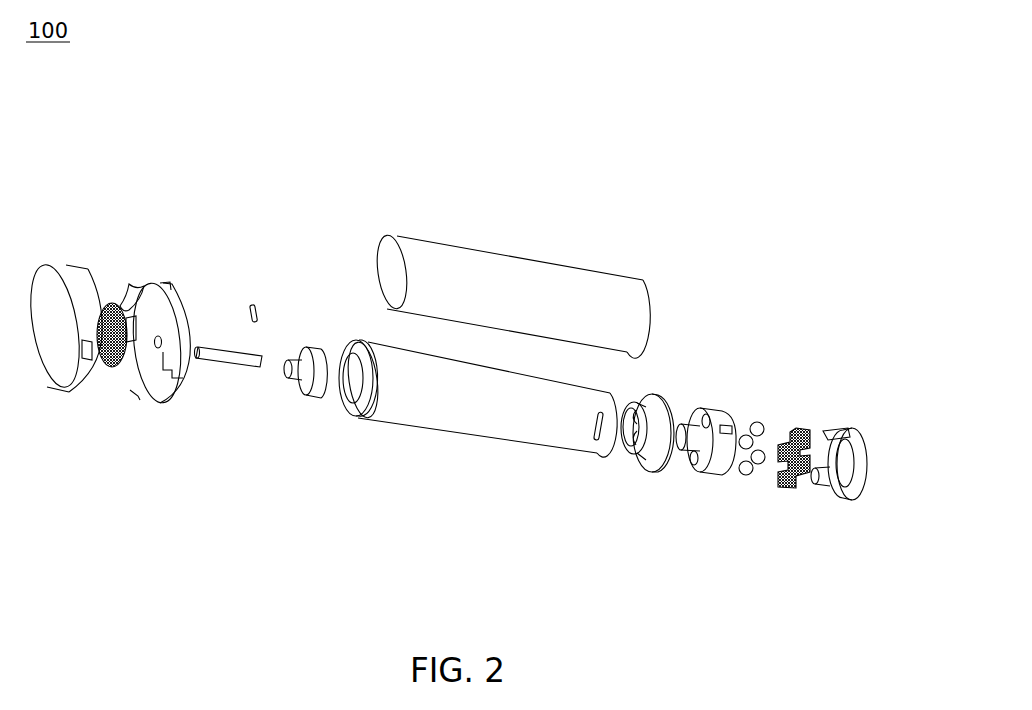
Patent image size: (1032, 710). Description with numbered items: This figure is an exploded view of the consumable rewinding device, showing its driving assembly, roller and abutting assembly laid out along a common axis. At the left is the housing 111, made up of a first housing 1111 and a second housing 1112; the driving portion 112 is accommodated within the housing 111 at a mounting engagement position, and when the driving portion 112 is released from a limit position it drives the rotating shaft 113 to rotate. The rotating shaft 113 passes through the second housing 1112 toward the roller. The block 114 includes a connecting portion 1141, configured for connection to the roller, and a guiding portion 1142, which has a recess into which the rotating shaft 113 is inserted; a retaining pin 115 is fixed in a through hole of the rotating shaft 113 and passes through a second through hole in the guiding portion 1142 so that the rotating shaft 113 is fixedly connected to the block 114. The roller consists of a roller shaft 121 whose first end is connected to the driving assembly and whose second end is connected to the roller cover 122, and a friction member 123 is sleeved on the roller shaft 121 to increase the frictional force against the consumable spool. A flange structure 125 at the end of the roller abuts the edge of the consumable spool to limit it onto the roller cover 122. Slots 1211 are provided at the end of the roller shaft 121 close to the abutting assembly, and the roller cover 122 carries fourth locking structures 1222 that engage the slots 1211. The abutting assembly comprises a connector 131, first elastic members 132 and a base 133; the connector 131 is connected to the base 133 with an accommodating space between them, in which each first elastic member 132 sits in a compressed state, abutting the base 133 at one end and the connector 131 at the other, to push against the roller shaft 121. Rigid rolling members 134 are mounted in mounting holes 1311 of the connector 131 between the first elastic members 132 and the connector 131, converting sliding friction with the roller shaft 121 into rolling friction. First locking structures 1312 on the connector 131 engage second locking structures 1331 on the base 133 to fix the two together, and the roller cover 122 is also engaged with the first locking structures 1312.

The housing 111 is at (220, 220).
The first housing 1111 is at (93, 272).
The second housing 1112 is at (184, 293).
The driving portion 112 is at (117, 365).
The rotating shaft 113 is at (220, 362).
The retaining pin 115 is at (257, 300).
The block 114 is at (313, 438).
The connecting portion 1141 is at (319, 345).
The guiding portion 1142 is at (294, 375).
The flange structure 125 is at (358, 418).
The roller shaft 121 is at (430, 402).
The slots 1211 is at (598, 443).
The friction member 123 is at (608, 298).
The roller cover 122 is at (668, 485).
The fourth locking structures 1222 is at (644, 416).
The connector 131 is at (724, 388).
The mounting holes 1311 is at (703, 407).
The first locking structures 1312 is at (716, 483).
The rigid rolling members 134 is at (760, 472).
The first elastic members 132 is at (796, 430).
The base 133 is at (862, 468).
The second locking structures 1331 is at (830, 490).